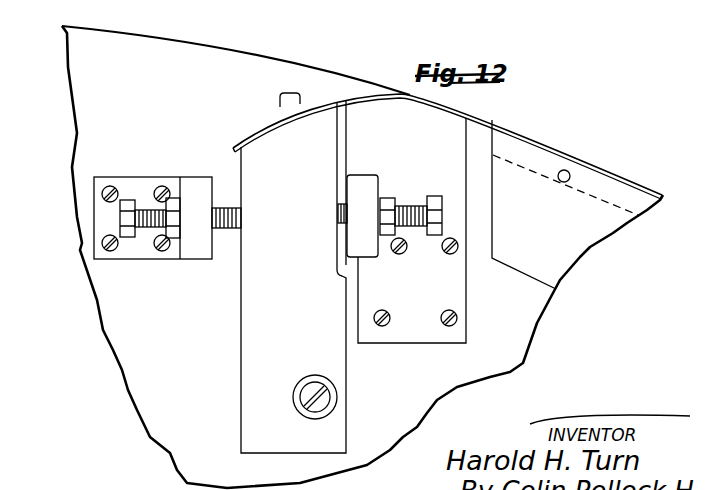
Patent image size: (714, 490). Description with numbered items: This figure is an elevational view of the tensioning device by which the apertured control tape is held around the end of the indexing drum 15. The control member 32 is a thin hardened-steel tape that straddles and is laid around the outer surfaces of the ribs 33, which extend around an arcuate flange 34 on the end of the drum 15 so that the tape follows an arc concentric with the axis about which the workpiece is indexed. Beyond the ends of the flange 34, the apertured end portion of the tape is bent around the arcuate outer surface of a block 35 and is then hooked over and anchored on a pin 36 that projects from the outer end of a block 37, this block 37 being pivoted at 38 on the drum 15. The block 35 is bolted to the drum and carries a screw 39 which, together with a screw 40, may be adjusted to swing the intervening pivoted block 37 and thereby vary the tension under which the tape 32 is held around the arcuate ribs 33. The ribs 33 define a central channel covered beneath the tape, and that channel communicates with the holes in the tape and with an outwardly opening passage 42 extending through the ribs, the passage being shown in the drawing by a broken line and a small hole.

The drum 15 is at (240, 62).
The control member 32 is at (484, 119).
The ribs 33 is at (660, 207).
The arcuate flange 34 is at (628, 214).
The blocks 35 is at (420, 333).
The pins 36 is at (280, 104).
The block 37 is at (252, 337).
The pivot 38 is at (323, 398).
The screws 39 is at (433, 198).
The screws 40 is at (125, 200).
The passage 42 is at (559, 180).